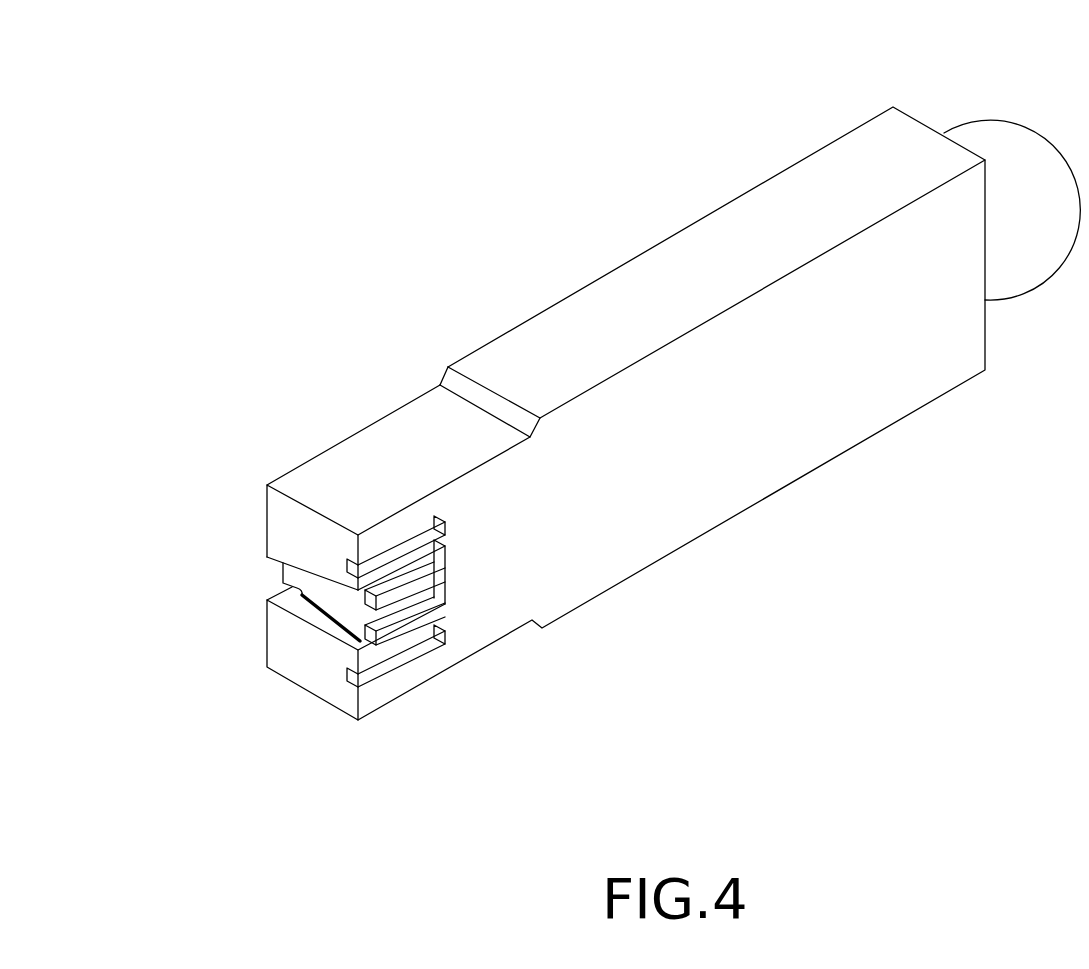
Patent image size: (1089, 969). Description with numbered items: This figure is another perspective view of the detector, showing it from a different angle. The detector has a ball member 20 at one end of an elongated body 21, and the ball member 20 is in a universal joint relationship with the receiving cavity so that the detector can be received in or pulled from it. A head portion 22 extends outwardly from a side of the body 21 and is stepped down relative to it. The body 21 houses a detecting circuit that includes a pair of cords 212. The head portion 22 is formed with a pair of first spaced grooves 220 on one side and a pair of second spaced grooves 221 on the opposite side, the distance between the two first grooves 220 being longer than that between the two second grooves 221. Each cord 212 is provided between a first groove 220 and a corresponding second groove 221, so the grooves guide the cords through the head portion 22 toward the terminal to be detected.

The ball member 20 is at (1014, 147).
The body 21 is at (650, 270).
The head portion 22 is at (370, 458).
The first spaced grooves 220 is at (410, 567).
The second spaced grooves 221 is at (287, 582).
The cords 212 is at (337, 623).